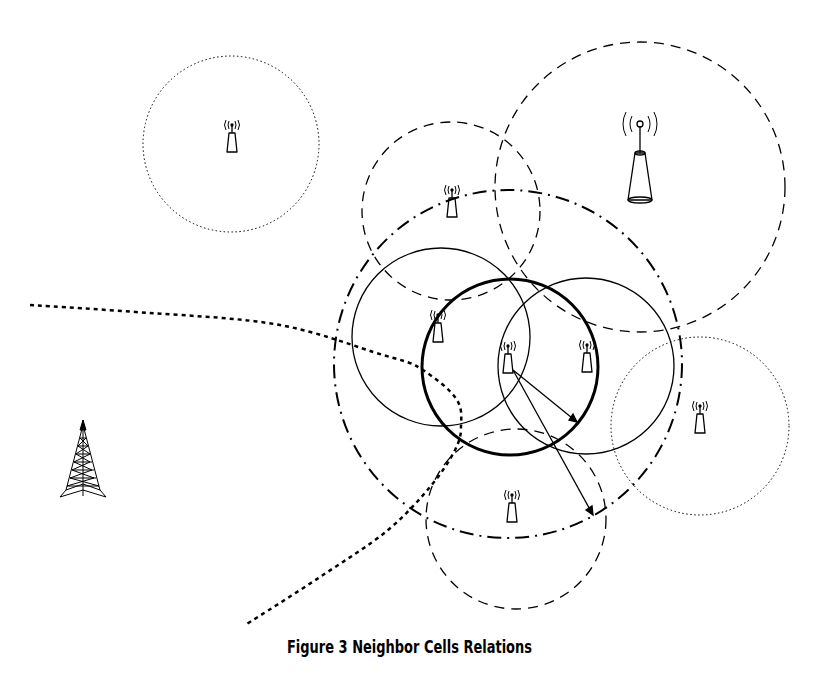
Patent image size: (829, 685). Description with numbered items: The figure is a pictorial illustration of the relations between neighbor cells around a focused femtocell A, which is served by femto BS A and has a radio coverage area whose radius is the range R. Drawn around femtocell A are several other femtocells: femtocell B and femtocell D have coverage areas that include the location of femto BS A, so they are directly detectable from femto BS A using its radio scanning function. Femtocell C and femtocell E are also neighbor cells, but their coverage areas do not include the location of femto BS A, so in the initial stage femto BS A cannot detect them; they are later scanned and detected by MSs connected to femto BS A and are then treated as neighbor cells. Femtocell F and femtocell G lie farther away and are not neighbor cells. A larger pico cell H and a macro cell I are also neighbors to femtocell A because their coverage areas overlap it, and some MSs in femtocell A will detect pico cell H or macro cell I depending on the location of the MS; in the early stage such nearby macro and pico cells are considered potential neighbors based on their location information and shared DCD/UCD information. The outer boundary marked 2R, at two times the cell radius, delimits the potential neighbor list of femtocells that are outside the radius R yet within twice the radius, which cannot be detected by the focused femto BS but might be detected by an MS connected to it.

The femtocell A is at (508, 364).
The femtocell B is at (586, 366).
The femtocell C is at (451, 211).
The femtocell D is at (441, 337).
The femtocell E is at (516, 519).
The femtocell F is at (700, 426).
The femtocell G is at (231, 144).
The pico cell H is at (640, 187).
The macro cell I is at (245, 465).
The range R is at (545, 396).
The two times the cell radius 2R is at (553, 442).